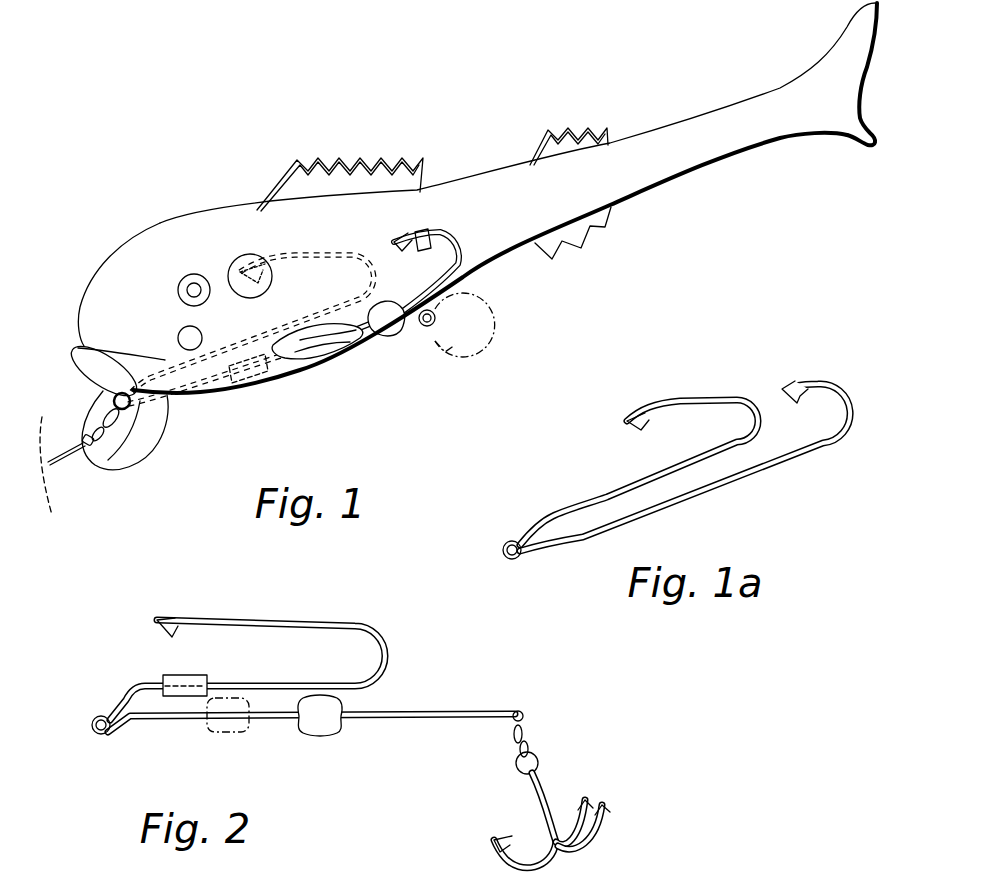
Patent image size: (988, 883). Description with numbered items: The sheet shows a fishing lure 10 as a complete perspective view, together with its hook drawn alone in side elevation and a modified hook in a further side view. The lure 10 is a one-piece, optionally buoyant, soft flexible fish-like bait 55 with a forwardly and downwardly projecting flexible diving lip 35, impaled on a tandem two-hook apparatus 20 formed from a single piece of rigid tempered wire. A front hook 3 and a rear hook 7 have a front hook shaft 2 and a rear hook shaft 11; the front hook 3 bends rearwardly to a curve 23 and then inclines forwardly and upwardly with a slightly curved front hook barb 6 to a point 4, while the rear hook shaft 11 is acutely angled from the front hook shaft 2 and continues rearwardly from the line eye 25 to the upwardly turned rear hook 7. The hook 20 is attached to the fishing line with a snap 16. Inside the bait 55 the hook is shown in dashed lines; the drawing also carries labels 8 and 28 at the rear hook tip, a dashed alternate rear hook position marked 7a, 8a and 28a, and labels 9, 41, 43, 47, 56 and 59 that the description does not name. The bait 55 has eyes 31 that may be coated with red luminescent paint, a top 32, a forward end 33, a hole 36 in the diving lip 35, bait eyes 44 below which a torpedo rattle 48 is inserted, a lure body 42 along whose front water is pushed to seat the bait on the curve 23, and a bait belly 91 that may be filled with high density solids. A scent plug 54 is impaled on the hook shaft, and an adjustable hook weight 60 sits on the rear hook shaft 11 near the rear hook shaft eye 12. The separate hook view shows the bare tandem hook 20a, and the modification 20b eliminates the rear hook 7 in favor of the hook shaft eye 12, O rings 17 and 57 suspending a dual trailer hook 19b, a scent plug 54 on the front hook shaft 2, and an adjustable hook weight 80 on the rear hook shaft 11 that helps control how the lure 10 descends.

In FIG. 1, the fishing lure 10 is at (485, 146).
In FIG. 1, the tandem two-hook apparatus 20 is at (126, 272).
In FIG. 1A, the double hook 20a is at (827, 475).
In FIG. 2, the hook assembly 20b is at (374, 745).
In FIG. 1, the front hook shaft 2 is at (248, 340).
In FIG. 1A, the front hook shaft 2 is at (608, 498).
In FIG. 2, the front hook shaft 2 is at (215, 686).
In FIG. 1, the front hook 3 is at (338, 257).
In FIG. 1A, the front hook 3 is at (688, 403).
In FIG. 2, the front hook 3 is at (369, 640).
In FIG. 1, the point 4 is at (238, 268).
In FIG. 1A, the point 4 is at (622, 420).
In FIG. 2, the point 4 is at (155, 623).
In FIG. 1, the front hook barb 6 is at (305, 256).
In FIG. 1A, the front hook barb 6 is at (650, 410).
In FIG. 2, the front hook barb 6 is at (268, 626).
In FIG. 1, the rear hook 7 is at (468, 266).
In FIG. 1A, the rear hook 7 is at (849, 420).
In FIG. 1, the alternate bend position 7a is at (492, 318).
In FIG. 1, the second point 8 is at (444, 234).
In FIG. 1A, the second point 8 is at (828, 389).
In FIG. 1, the alternate point position 8a is at (488, 340).
In FIG. 1A, the eye bend 9 is at (540, 523).
In FIG. 2, the eye bend 9 is at (130, 697).
In FIG. 1, the rear hook shaft 11 is at (383, 338).
In FIG. 2, the rear hook shaft 11 is at (262, 716).
In FIG. 1, the hook shaft eye 12 is at (436, 320).
In FIG. 2, the hook shaft eye 12 is at (512, 711).
In FIG. 1, the snap 16 is at (97, 465).
In FIG. 2, the O ring 17 is at (530, 735).
In FIG. 2, the dual trailer hook 19b is at (605, 818).
In FIG. 1, the curve 23 is at (374, 266).
In FIG. 1A, the curve 23 is at (752, 410).
In FIG. 2, the curve 23 is at (388, 658).
In FIG. 1, the line eye 25 is at (112, 401).
In FIG. 1A, the line eye 25 is at (500, 550).
In FIG. 2, the line eye 25 is at (92, 730).
In FIG. 1, the barb 28 is at (399, 240).
In FIG. 1A, the barb 28 is at (790, 396).
In FIG. 1, the alternate barb position 28a is at (462, 357).
In FIG. 1, the eyes 31 is at (176, 282).
In FIG. 1, the top 32 is at (160, 222).
In FIG. 1, the forward end 33 is at (103, 276).
In FIG. 1, the diving lip 35 is at (143, 450).
In FIG. 1, the hole 36 is at (77, 352).
In FIG. 1, the rear dorsal fin 41 is at (580, 136).
In FIG. 1, the lure body 42 is at (345, 357).
In FIG. 1, the point opening 43 is at (258, 270).
In FIG. 1, the bait eyes 44 is at (583, 237).
In FIG. 1, the dorsal fin 47 is at (349, 163).
In FIG. 1, the torpedo rattle 48 is at (190, 350).
In FIG. 1, the scent plug 54 is at (241, 384).
In FIG. 2, the scent plug 54 is at (190, 677).
In FIG. 1, the bait 55 is at (670, 133).
In FIG. 1, the clip 56 is at (432, 256).
In FIG. 2, the O ring 57 is at (540, 765).
In FIG. 1, the tail 59 is at (855, 60).
In FIG. 1, the adjustable hook weight 60 is at (398, 333).
In FIG. 2, the adjustable hook weight 80 is at (320, 730).
In FIG. 1, the bait belly 91 is at (305, 382).